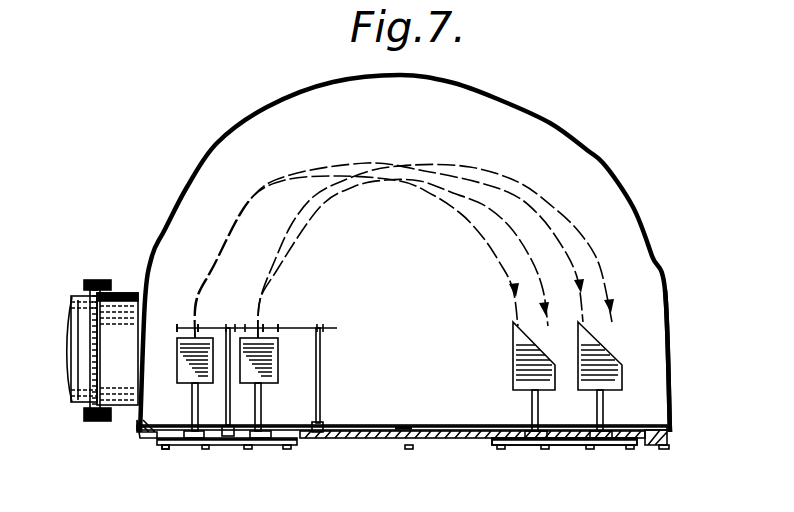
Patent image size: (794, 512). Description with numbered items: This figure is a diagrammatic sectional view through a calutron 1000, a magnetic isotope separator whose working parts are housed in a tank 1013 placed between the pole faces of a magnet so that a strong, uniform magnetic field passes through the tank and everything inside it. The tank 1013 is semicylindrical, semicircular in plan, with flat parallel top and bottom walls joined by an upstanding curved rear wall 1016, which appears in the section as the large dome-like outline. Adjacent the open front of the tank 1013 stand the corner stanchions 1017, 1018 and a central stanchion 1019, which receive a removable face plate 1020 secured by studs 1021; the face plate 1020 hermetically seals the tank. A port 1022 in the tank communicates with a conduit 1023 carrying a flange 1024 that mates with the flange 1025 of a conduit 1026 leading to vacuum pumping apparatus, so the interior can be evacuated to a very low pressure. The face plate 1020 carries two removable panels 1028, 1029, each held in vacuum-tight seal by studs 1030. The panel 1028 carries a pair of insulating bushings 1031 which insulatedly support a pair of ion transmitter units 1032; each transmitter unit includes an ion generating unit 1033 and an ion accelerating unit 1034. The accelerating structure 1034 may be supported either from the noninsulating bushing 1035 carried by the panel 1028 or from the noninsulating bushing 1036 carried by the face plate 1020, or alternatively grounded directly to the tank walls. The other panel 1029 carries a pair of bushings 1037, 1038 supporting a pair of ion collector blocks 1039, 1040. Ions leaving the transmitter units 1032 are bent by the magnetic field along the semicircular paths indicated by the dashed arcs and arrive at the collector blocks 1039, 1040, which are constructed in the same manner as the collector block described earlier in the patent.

The calutron 1000 is at (193, 136).
The tank 1013 is at (608, 161).
The curved rear wall 1016 is at (667, 285).
The corner stanchion 1017 is at (142, 436).
The corner stanchion 1018 is at (661, 430).
The central stanchion 1019 is at (403, 427).
The face plate 1020 is at (438, 440).
The studs 1021 is at (166, 450).
The port 1022 is at (135, 293).
The conduit 1023 is at (118, 424).
The flange 1024 is at (100, 419).
The flange 1025 is at (89, 408).
The conduit 1026 is at (77, 374).
The removable panel 1028 is at (262, 446).
The removable panel 1029 is at (575, 452).
The studs 1030 is at (289, 449).
The insulating bushings 1031 is at (191, 409).
The ion transmitter units 1032 is at (173, 324).
The ion generating units 1033 is at (186, 356).
The ion accelerating units 1034 is at (243, 326).
The noninsulating bushing 1035 is at (232, 420).
The noninsulating bushing 1036 is at (321, 383).
The bushing 1037 is at (531, 410).
The bushing 1038 is at (604, 410).
The ion collector block 1039 is at (510, 362).
The ion collector block 1040 is at (608, 372).